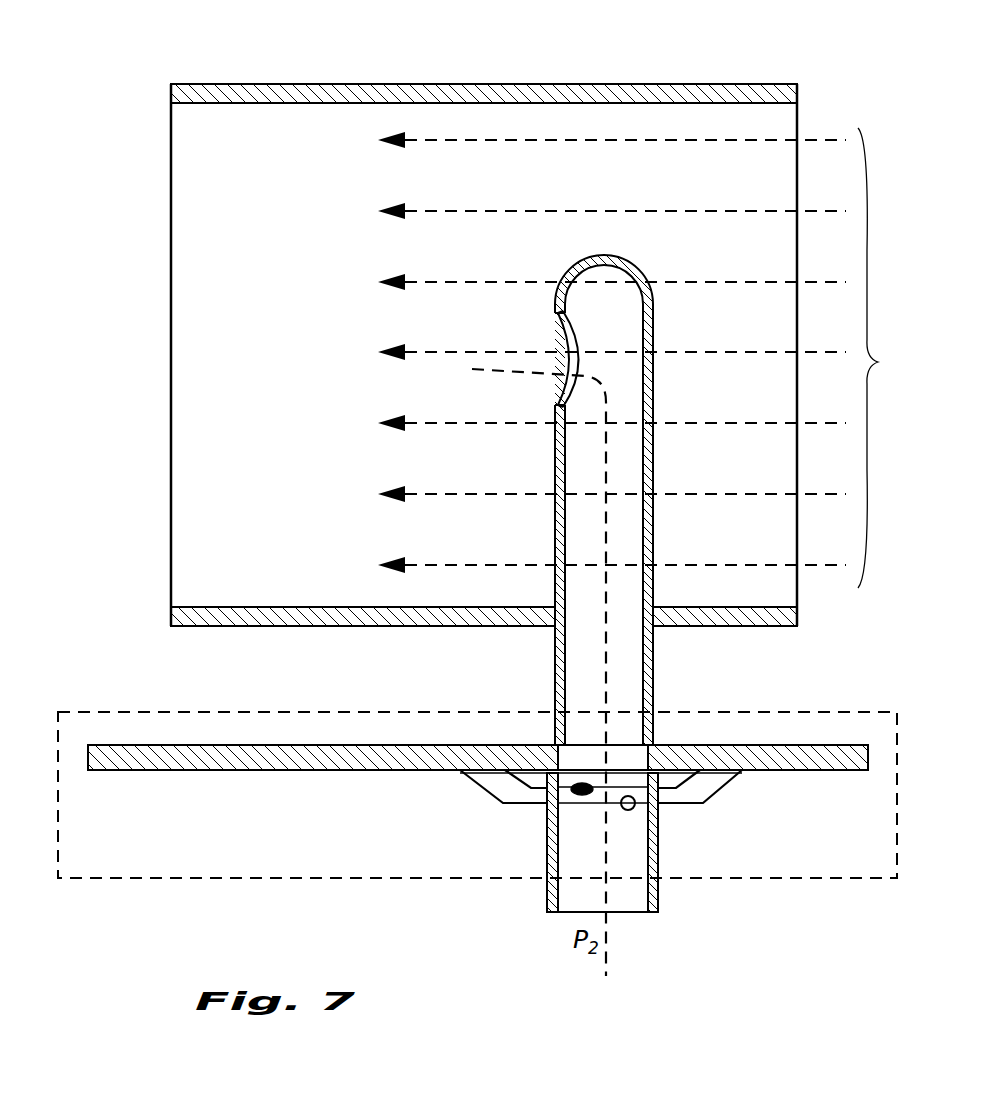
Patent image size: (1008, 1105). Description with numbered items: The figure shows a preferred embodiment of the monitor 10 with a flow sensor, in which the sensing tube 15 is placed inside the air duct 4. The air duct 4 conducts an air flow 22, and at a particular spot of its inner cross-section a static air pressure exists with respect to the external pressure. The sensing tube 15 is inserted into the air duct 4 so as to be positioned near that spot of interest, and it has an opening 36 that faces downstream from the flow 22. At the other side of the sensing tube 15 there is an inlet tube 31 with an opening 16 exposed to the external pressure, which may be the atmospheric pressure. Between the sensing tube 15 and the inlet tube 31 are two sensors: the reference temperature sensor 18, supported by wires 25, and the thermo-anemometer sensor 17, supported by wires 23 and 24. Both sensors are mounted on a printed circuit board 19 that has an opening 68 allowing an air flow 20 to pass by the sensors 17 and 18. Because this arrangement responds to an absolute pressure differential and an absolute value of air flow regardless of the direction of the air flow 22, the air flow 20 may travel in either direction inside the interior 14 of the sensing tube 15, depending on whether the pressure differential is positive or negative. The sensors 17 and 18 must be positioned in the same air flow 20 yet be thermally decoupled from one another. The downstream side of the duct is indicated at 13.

The air duct 4 is at (258, 93).
The duct (downstream side) 13 is at (187, 128).
The interior of the sensing tube 14 is at (635, 308).
The opening 36 is at (558, 318).
The air flow 20 is at (484, 364).
The air flow 22 is at (647, 358).
The sensing tube 15 is at (653, 651).
The printed circuit board 19 is at (755, 745).
The opening 68 is at (625, 750).
The monitor 10 is at (124, 866).
The opening 16 is at (628, 913).
The inlet tube 31 is at (548, 905).
The wires 25 is at (476, 783).
The wire 24 is at (702, 778).
The wire 23 is at (673, 790).
The TA sensor 17 is at (582, 796).
The reference temperature sensor 18 is at (632, 809).